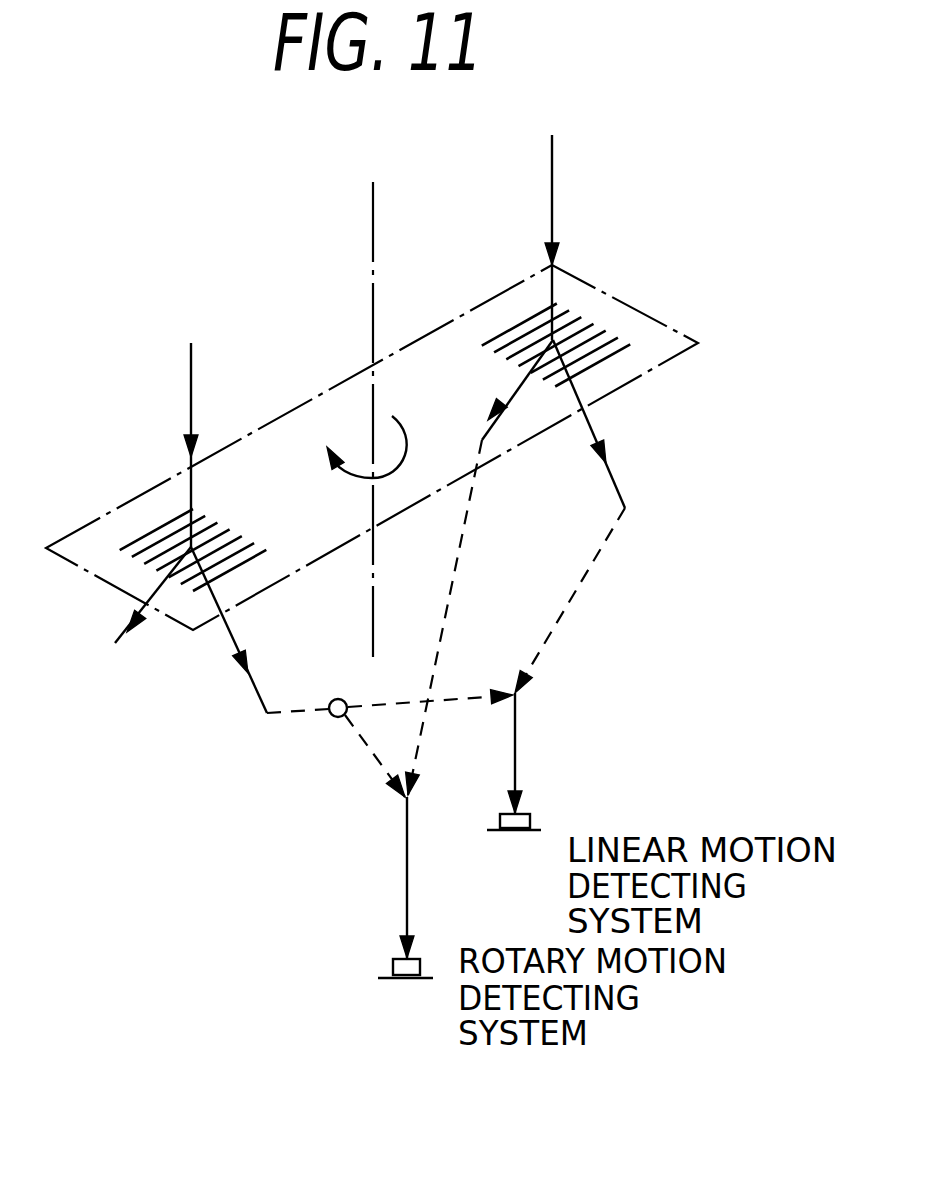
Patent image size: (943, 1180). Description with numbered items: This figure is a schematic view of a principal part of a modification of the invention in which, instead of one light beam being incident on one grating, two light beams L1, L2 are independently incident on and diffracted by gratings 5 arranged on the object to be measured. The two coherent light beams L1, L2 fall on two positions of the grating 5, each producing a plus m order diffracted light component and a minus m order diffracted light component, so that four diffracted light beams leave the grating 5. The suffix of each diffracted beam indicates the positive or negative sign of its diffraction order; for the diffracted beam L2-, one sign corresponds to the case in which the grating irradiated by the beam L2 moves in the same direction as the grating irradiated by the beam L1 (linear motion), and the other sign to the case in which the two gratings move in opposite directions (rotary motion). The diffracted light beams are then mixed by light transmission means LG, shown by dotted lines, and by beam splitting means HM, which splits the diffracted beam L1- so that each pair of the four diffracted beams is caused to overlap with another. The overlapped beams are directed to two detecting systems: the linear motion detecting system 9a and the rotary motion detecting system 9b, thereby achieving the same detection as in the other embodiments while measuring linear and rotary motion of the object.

The grating 5 is at (312, 397).
The linear motion detecting system 9a is at (535, 822).
The rotary motion detecting system 9b is at (421, 967).
The beam splitting means HM is at (337, 718).
The light transmission means LG is at (553, 628).
The light beam L1 is at (208, 445).
The light beam L2 is at (571, 237).
The negative order diffracted light component L1- is at (244, 661).
The diffracted light component of L2 L2- is at (498, 388).